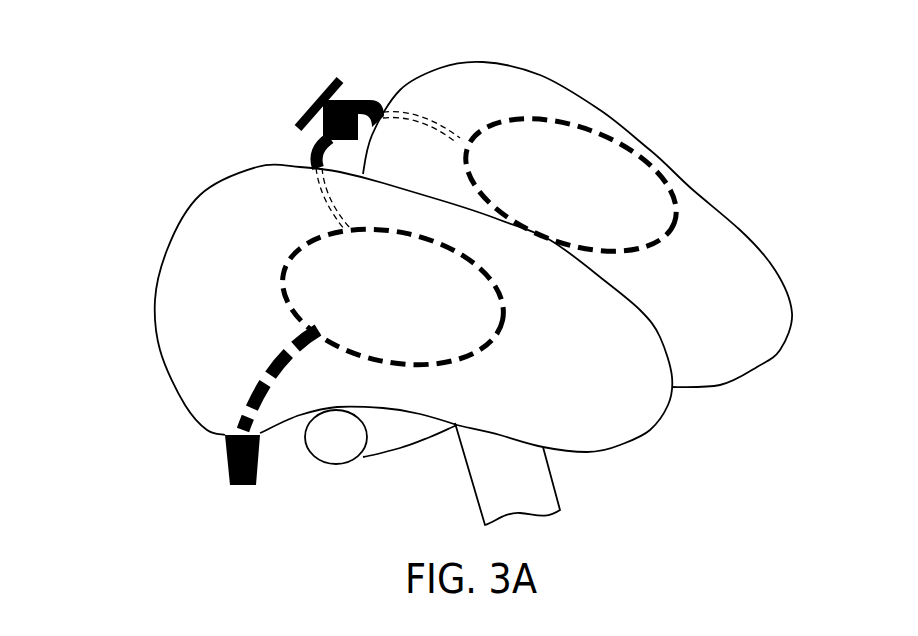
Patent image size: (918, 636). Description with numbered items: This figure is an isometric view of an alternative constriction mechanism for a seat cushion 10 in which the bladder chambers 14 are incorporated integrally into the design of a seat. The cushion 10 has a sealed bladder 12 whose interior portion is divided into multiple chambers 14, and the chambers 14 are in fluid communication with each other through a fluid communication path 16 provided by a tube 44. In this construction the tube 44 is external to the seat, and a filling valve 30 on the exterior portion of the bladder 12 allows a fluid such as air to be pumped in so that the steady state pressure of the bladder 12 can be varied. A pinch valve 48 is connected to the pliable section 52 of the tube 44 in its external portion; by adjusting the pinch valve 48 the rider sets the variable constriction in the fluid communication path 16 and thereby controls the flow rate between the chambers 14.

The cushion 10 is at (135, 73).
The sealed bladder 12 is at (303, 205).
The chambers 14 is at (420, 283).
The fluid communication path 16 is at (413, 113).
The filling valve 30 is at (230, 485).
The tube 44 is at (340, 222).
The pinch valve 48 is at (313, 110).
The pliable section 52 is at (310, 143).